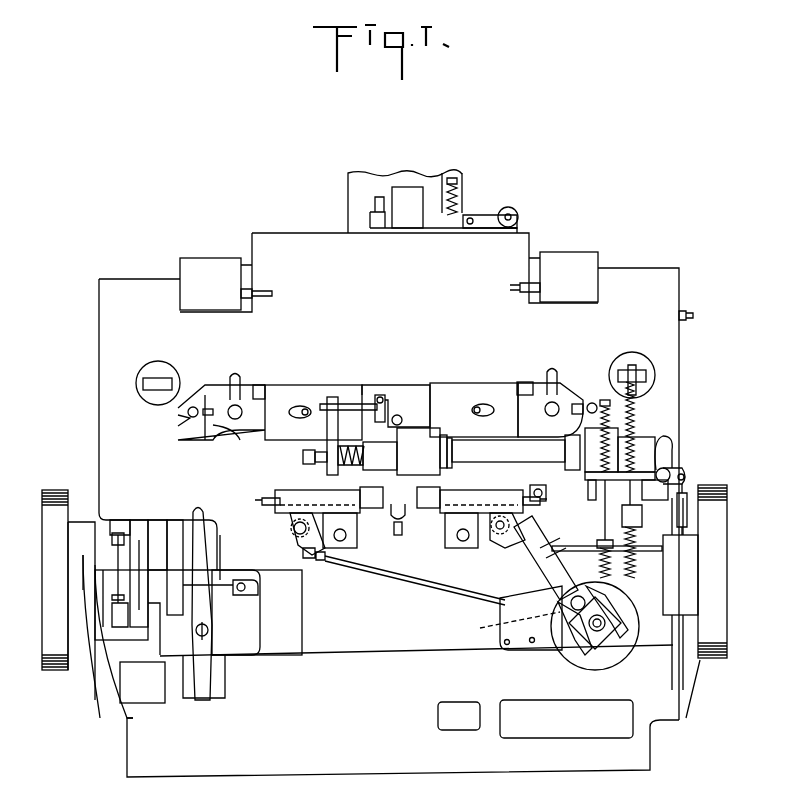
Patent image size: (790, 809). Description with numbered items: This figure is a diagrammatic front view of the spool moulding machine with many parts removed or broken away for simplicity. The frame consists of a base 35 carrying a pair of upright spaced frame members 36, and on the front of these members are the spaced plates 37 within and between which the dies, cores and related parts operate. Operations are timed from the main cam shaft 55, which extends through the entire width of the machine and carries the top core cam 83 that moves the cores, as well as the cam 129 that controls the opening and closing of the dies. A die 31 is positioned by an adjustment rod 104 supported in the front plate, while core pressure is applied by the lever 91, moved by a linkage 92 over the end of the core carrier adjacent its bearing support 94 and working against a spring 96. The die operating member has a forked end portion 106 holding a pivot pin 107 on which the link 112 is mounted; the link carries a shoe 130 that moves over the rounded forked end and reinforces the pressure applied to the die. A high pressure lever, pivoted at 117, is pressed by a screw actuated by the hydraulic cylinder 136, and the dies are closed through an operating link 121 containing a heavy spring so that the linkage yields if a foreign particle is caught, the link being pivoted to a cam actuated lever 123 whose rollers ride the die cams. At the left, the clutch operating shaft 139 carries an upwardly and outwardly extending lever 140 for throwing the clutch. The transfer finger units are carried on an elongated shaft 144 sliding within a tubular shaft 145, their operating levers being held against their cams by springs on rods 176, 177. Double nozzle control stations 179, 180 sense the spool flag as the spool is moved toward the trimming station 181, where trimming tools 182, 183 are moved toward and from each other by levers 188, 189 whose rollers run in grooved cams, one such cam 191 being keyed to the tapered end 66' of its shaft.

The die 31 is at (410, 406).
The base 35 is at (128, 745).
The upright frame member 36 is at (295, 634).
The plate 37 is at (112, 316).
The main cam shaft 55 is at (158, 517).
The tapered end of shaft 66' is at (612, 637).
The top core cam 83 is at (178, 517).
The lever 91 is at (472, 217).
The linkage 92 is at (519, 212).
The bearing support 94 is at (405, 186).
The spring 96 is at (463, 190).
The adjustment rod 104 is at (303, 407).
The forked end portion 106 is at (238, 428).
The pivot pin 107 is at (240, 406).
The link 112 is at (186, 418).
The pivot 117 is at (142, 374).
The operating link 121 is at (113, 518).
The cam actuated lever 123 is at (86, 586).
The cam 129 is at (135, 517).
The shoe 130 is at (230, 386).
The hydraulic cylinder 136 is at (227, 257).
The clutch operating shaft 139 is at (209, 631).
The lever 140 is at (204, 557).
The elongated shaft 144 is at (302, 458).
The tubular shaft 145 is at (510, 453).
The rod 176 is at (604, 402).
The rod 177 is at (636, 412).
The double nozzle control station 179 is at (376, 395).
The double nozzle control station 180 is at (392, 524).
The trimming station 181 is at (352, 482).
The trimming tool 182 is at (370, 512).
The trimming tool 183 is at (432, 514).
The lever 188 is at (440, 583).
The lever 189 is at (556, 566).
The cam 191 is at (566, 655).